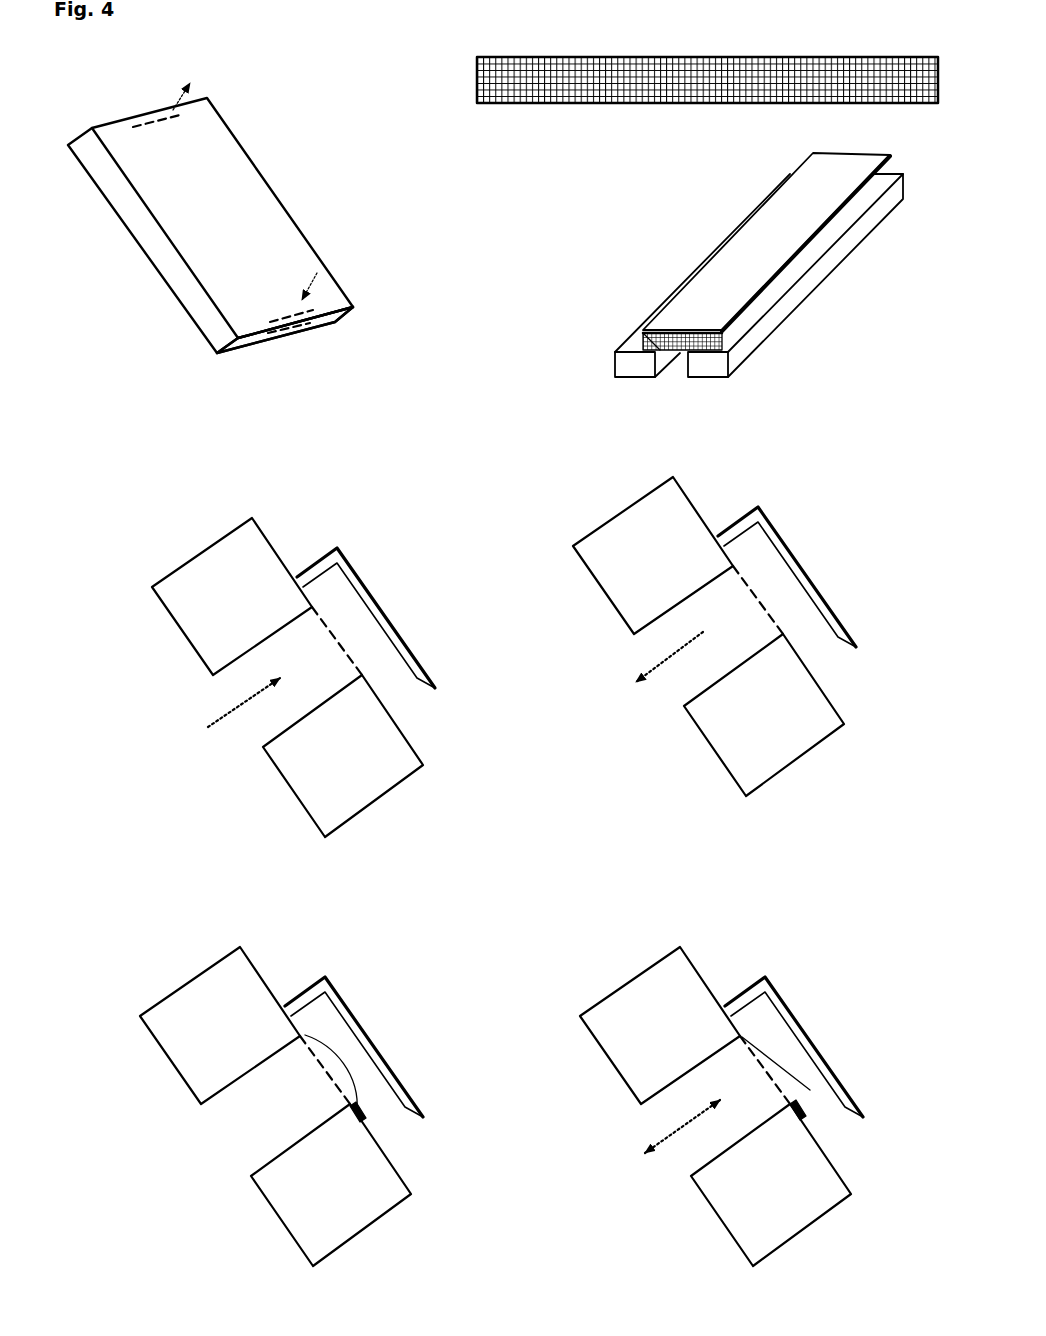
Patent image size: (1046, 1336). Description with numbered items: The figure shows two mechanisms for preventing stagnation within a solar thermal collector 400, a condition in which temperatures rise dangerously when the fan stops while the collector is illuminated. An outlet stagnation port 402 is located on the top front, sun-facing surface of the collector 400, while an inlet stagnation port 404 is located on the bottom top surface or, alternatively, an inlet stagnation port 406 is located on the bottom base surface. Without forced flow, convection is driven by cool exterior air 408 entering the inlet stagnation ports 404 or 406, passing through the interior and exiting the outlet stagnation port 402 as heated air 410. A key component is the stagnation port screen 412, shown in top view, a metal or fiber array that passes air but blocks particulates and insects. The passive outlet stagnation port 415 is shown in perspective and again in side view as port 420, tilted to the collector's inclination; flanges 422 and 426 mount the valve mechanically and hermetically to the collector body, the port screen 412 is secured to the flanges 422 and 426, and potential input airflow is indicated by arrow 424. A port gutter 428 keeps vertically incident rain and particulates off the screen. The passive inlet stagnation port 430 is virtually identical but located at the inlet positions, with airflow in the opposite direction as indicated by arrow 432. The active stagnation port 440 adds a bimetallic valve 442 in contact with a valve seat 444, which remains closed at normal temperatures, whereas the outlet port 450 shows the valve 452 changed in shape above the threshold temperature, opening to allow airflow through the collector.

The collector 400 is at (280, 192).
The outlet stagnation port 402 is at (135, 117).
The inlet stagnation port 404 is at (275, 313).
The inlet stagnation port 406 is at (275, 340).
The cool exterior air 408 is at (315, 288).
The heated air 410 is at (190, 98).
The stagnation port screen 412 is at (547, 50).
The passive outlet stagnation port 415 is at (607, 270).
The port 420 is at (135, 542).
The flange 422 is at (607, 353).
The arrow 424 is at (228, 727).
The flange 426 is at (733, 350).
The port gutter 428 is at (803, 232).
The passive inlet stagnation port 430 is at (570, 493).
The arrow 432 is at (657, 678).
The active stagnation port 440 is at (173, 923).
The bimetallic valve 442 is at (347, 1002).
The valve seat 444 is at (363, 1112).
The outlet port 450 is at (592, 925).
The valve 452 is at (773, 1052).